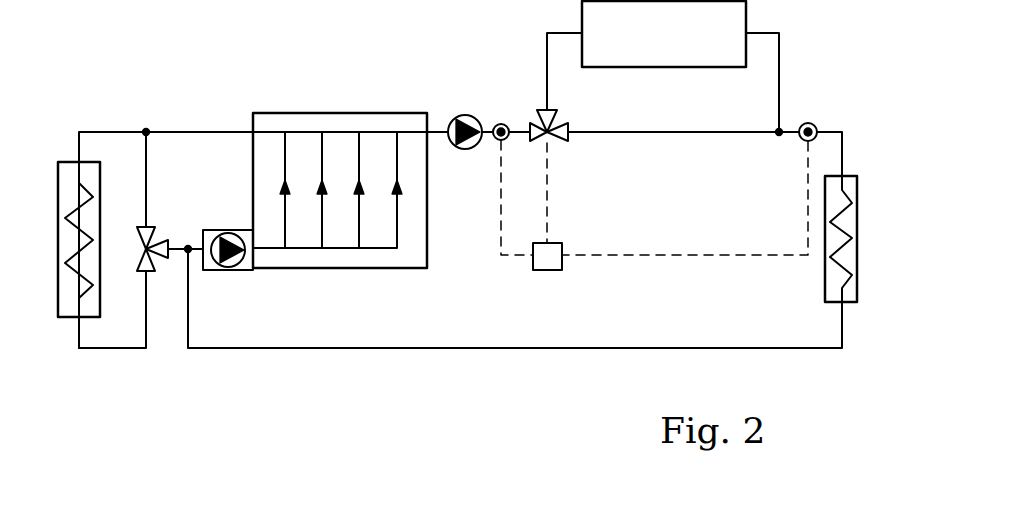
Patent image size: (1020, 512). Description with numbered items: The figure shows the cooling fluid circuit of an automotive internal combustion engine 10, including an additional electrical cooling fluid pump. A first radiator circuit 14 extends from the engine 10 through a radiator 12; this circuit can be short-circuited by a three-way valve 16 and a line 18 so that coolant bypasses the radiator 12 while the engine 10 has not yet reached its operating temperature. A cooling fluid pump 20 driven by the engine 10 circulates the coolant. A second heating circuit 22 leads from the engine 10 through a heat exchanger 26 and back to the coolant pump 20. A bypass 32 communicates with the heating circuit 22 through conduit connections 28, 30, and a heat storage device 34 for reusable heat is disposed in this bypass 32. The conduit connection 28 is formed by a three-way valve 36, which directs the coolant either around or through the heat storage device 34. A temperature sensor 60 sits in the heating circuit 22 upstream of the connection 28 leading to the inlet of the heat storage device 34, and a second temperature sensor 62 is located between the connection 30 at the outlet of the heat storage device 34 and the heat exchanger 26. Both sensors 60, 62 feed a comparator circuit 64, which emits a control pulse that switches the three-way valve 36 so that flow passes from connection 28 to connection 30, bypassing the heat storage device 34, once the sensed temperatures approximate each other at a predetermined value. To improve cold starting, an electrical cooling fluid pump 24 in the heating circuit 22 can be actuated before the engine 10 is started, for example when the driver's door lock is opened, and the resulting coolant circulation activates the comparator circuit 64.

The internal combustion engine 10 is at (347, 258).
The radiator 12 is at (92, 173).
The first radiator circuit 14 is at (202, 128).
The three-way valve 16 is at (157, 232).
The line 18 is at (148, 193).
The cooling fluid pump 20 is at (240, 275).
The second heating circuit 22 is at (513, 350).
The electrical cooling fluid pump 24 is at (465, 151).
The heat exchanger 26 is at (857, 238).
The conduit connection 28 is at (562, 147).
The conduit connection 30 is at (766, 141).
The bypass 32 is at (782, 82).
The heat storage device 34 is at (662, 68).
The three-way valve 36 is at (542, 117).
The temperature sensor 60 is at (497, 121).
The second temperature sensor 62 is at (812, 122).
The comparator circuit 64 is at (552, 278).